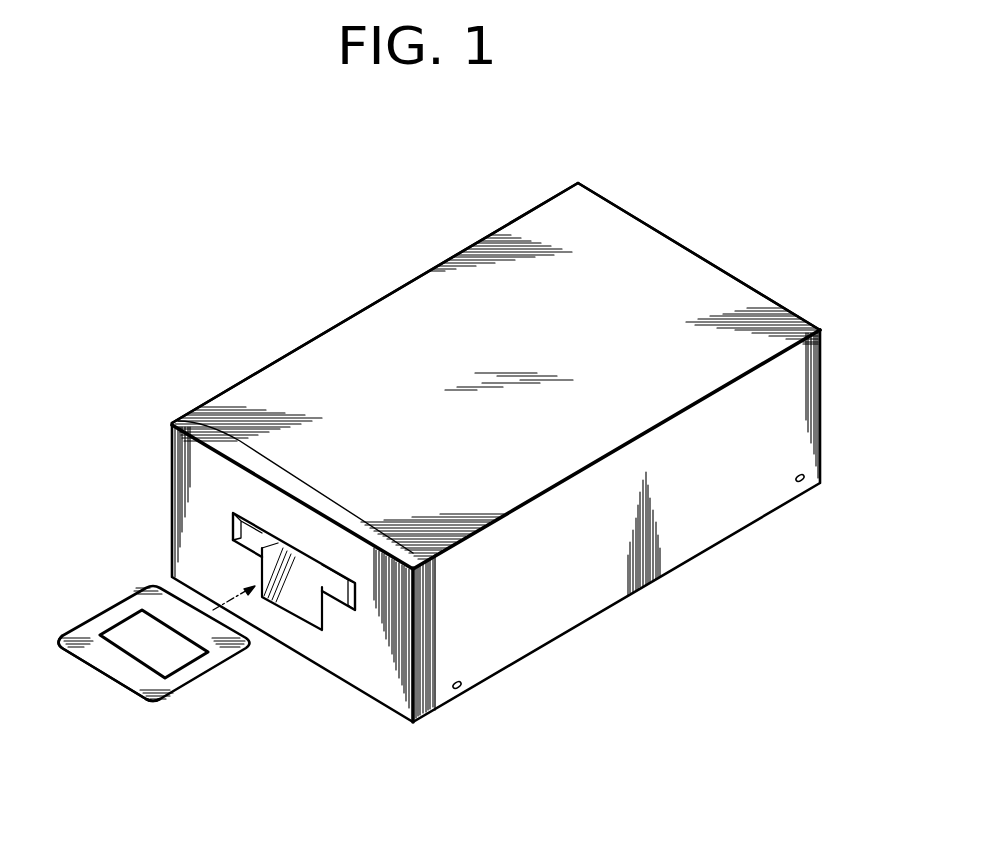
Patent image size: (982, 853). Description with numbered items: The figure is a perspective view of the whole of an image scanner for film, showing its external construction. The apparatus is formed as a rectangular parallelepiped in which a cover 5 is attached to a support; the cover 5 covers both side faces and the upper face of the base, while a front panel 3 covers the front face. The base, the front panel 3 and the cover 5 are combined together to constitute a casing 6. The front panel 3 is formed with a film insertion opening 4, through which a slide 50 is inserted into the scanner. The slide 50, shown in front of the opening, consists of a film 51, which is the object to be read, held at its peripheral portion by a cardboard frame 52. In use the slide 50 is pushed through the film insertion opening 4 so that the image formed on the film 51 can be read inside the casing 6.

The front panel 3 is at (190, 469).
The film insertion opening 4 is at (232, 537).
The cover 5 is at (685, 270).
The casing 6 is at (298, 370).
The slide 50 is at (103, 660).
The film 51 is at (155, 648).
The cardboard frame 52 is at (207, 668).